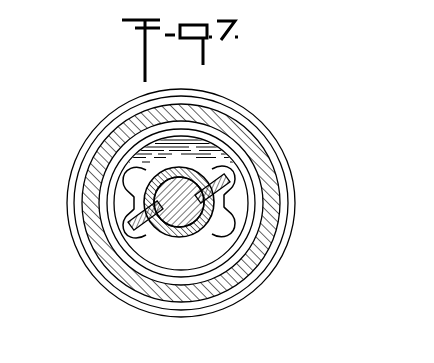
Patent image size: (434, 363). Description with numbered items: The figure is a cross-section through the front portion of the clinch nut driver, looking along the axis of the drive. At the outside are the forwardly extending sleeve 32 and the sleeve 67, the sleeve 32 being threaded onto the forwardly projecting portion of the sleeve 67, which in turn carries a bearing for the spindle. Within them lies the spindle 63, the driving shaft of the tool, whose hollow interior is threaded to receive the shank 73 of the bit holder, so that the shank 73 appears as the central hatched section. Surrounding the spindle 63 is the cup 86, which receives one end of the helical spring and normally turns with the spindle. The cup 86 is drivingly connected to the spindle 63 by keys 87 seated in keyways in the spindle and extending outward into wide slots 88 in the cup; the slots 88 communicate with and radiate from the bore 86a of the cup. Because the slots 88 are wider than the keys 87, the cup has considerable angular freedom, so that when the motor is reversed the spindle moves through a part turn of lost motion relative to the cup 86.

The sleeve 32 is at (131, 93).
The sleeve 67 is at (92, 248).
The cup 86 is at (213, 183).
The bore 86a is at (181, 155).
The spindle 63 is at (185, 243).
The shank 73 is at (179, 202).
The keys 87 is at (227, 196).
The slots 88 is at (229, 201).